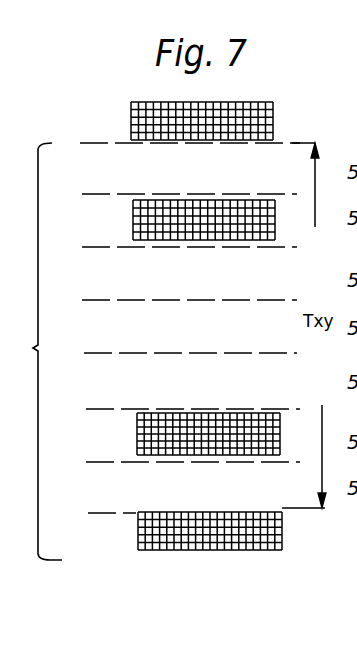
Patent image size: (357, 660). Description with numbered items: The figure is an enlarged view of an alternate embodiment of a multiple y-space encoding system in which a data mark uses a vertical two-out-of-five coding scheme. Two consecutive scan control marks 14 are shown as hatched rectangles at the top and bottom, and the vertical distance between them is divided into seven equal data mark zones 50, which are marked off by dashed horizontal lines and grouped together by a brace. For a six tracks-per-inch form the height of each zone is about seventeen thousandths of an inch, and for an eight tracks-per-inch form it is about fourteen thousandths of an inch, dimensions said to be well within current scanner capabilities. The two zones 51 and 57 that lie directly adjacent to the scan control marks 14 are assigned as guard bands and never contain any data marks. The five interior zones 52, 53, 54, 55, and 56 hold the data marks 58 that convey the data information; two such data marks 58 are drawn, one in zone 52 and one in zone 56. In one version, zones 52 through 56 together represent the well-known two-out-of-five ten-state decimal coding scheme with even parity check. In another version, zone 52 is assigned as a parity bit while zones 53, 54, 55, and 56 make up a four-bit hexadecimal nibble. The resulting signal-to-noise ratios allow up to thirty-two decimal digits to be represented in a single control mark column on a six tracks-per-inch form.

The scan control mark 14 is at (273, 112).
The data mark zone 50 is at (33, 351).
The zone 51 is at (115, 179).
The zone 52 is at (113, 224).
The zone 53 is at (113, 281).
The zone 54 is at (113, 336).
The zone 55 is at (116, 384).
The zone 56 is at (113, 441).
The zone 57 is at (123, 496).
The data mark 58 is at (275, 222).